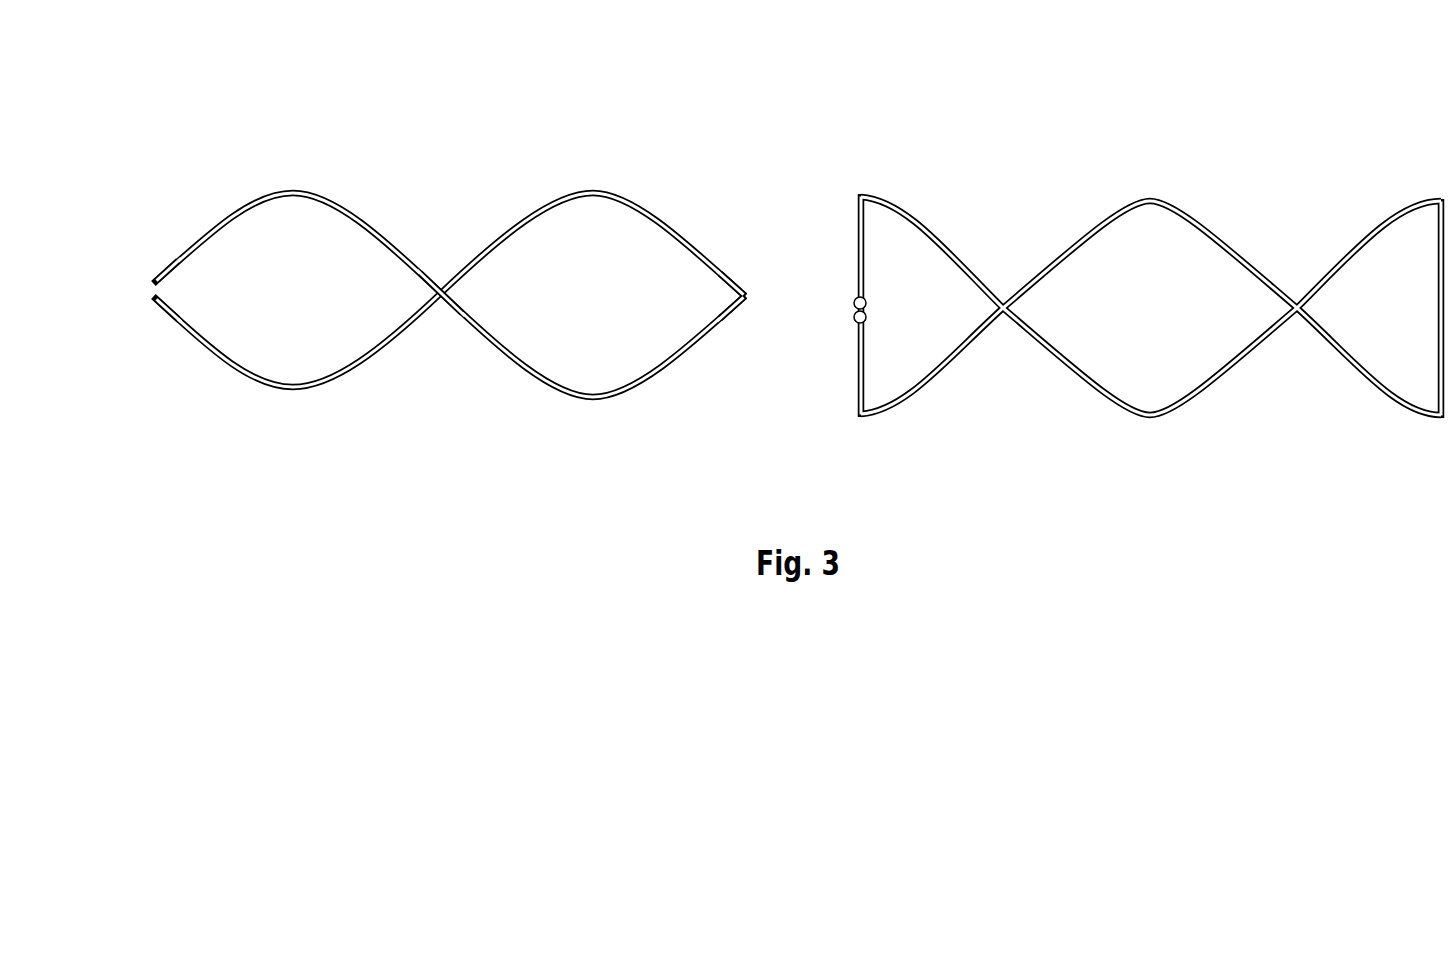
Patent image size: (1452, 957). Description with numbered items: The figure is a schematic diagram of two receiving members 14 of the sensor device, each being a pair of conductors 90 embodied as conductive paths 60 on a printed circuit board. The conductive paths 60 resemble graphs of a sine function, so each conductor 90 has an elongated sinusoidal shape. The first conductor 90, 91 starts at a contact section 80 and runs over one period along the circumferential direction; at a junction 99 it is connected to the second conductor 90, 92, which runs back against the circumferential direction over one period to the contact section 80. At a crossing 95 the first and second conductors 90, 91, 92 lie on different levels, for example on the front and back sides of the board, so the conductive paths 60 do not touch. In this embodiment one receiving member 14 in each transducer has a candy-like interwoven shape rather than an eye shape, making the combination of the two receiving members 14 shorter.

The receiving member 14 is at (458, 93).
The conductive path 60 is at (302, 191).
The contact section 80 is at (155, 218).
The conductor 90 is at (450, 297).
The first conductor 91 is at (393, 213).
The second conductor 92 is at (603, 161).
The crossing 95 is at (445, 330).
The junction 99 is at (742, 253).